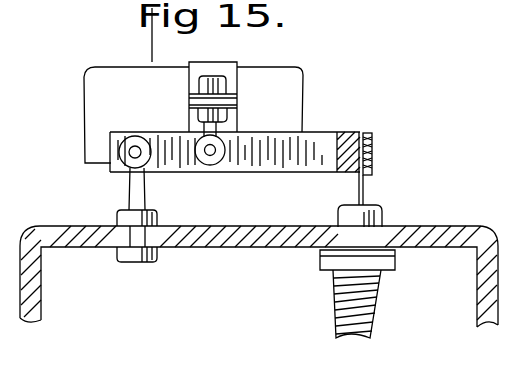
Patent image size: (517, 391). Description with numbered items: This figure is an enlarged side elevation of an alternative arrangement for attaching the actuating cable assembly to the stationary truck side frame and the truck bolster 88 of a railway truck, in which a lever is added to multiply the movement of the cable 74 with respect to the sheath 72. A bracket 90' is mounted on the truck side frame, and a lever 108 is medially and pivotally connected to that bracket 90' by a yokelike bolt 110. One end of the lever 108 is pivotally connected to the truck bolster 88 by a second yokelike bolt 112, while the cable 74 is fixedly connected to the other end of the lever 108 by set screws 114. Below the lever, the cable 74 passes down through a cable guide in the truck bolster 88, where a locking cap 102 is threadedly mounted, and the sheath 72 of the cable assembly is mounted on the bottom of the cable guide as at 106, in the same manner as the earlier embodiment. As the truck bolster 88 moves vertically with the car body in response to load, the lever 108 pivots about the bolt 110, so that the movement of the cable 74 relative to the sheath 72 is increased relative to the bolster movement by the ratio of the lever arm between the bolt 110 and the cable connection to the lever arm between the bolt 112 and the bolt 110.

The bracket 90' is at (216, 113).
The yokelike bolt 110 is at (225, 128).
The lever 108 is at (263, 170).
The set screws 114 is at (374, 138).
The cable 74 is at (366, 186).
The locking cap 102 is at (349, 205).
The truck bolster 88 is at (73, 240).
The yokelike bolt 112 is at (128, 190).
The sheath mounting 106 is at (383, 229).
The sheath 72 is at (340, 296).